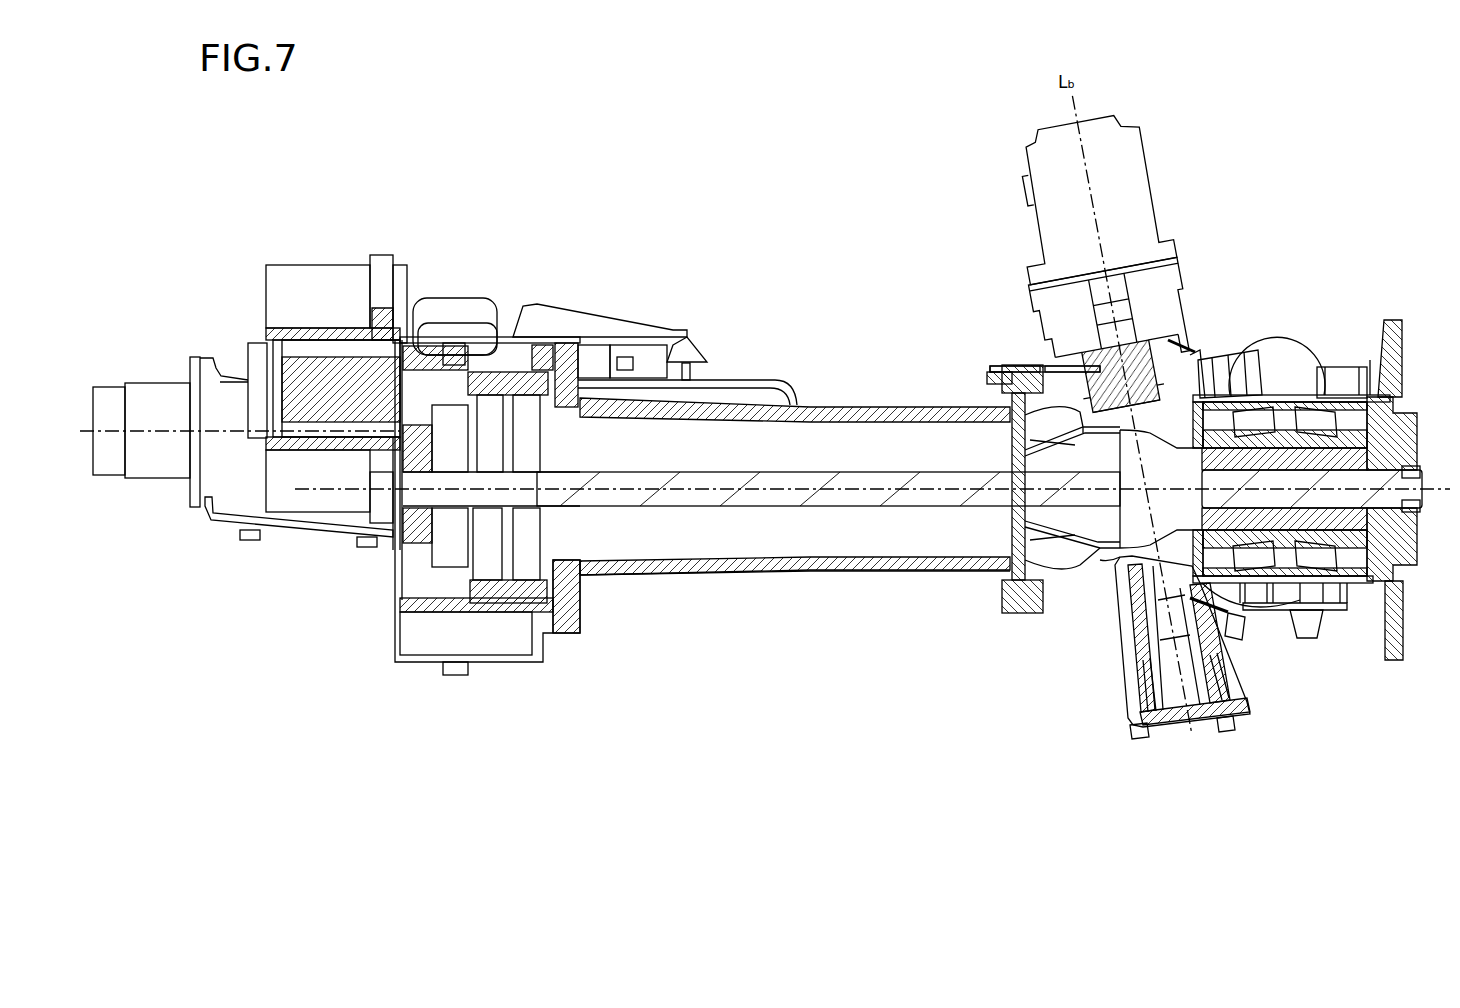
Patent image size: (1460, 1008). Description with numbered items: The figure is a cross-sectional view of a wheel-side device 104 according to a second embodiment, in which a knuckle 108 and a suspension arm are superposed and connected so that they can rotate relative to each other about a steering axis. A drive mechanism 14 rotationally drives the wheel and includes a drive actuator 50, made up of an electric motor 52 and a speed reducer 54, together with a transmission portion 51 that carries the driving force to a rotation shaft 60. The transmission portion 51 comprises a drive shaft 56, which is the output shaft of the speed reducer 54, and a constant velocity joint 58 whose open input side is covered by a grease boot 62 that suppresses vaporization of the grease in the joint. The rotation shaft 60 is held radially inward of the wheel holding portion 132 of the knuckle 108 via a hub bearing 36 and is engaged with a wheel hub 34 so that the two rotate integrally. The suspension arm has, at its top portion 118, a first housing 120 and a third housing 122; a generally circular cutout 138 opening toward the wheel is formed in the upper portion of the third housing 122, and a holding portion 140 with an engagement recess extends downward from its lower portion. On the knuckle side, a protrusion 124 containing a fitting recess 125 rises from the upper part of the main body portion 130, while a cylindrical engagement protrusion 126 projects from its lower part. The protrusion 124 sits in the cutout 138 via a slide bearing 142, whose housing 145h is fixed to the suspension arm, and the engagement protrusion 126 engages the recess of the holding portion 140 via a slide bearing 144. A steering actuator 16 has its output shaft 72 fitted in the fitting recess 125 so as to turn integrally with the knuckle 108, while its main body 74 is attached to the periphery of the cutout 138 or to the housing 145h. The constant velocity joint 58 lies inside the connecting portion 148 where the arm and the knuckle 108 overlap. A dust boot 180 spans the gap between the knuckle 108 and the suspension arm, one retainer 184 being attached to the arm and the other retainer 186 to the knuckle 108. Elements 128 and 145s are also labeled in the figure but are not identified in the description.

The drive mechanism 14 is at (700, 318).
The steering actuator 16 is at (1153, 105).
The wheel hub 34 is at (1405, 330).
The hub bearing 36 is at (1370, 380).
The drive actuator 50 is at (352, 245).
The transmission portion 51 is at (693, 525).
The electric motor 52 is at (300, 568).
The speed reducer 54 is at (483, 695).
The drive shaft 56 is at (820, 470).
The constant velocity joint 58 is at (1077, 432).
The rotation shaft 60 is at (1405, 450).
The grease boot 62 is at (1000, 408).
The output shaft 72 is at (1155, 300).
The main body 74 is at (1140, 283).
The wheel-side device 104 is at (517, 272).
The knuckle 108 is at (1265, 608).
The top portion 118 is at (803, 593).
The first housing 120 is at (750, 562).
The third housing 122 is at (1107, 707).
The protrusion 124 is at (1235, 348).
The fitting recess 125 is at (1100, 330).
The engagement protrusion 126 is at (1118, 590).
The inner member 128 is at (1118, 668).
The main body portion 130 is at (1225, 630).
The wheel holding portion 132 is at (1290, 387).
The cutout 138 is at (1010, 555).
The holding portion 140 is at (1203, 720).
The slide bearing 142 is at (1213, 350).
The slide bearing 144 is at (1128, 722).
The housing 145h is at (1032, 370).
The flange surface 145s is at (1032, 362).
The connecting portion 148 is at (1097, 650).
The dust boot 180 is at (1328, 628).
The retainer 184 is at (1306, 605).
The retainer 186 is at (1405, 600).